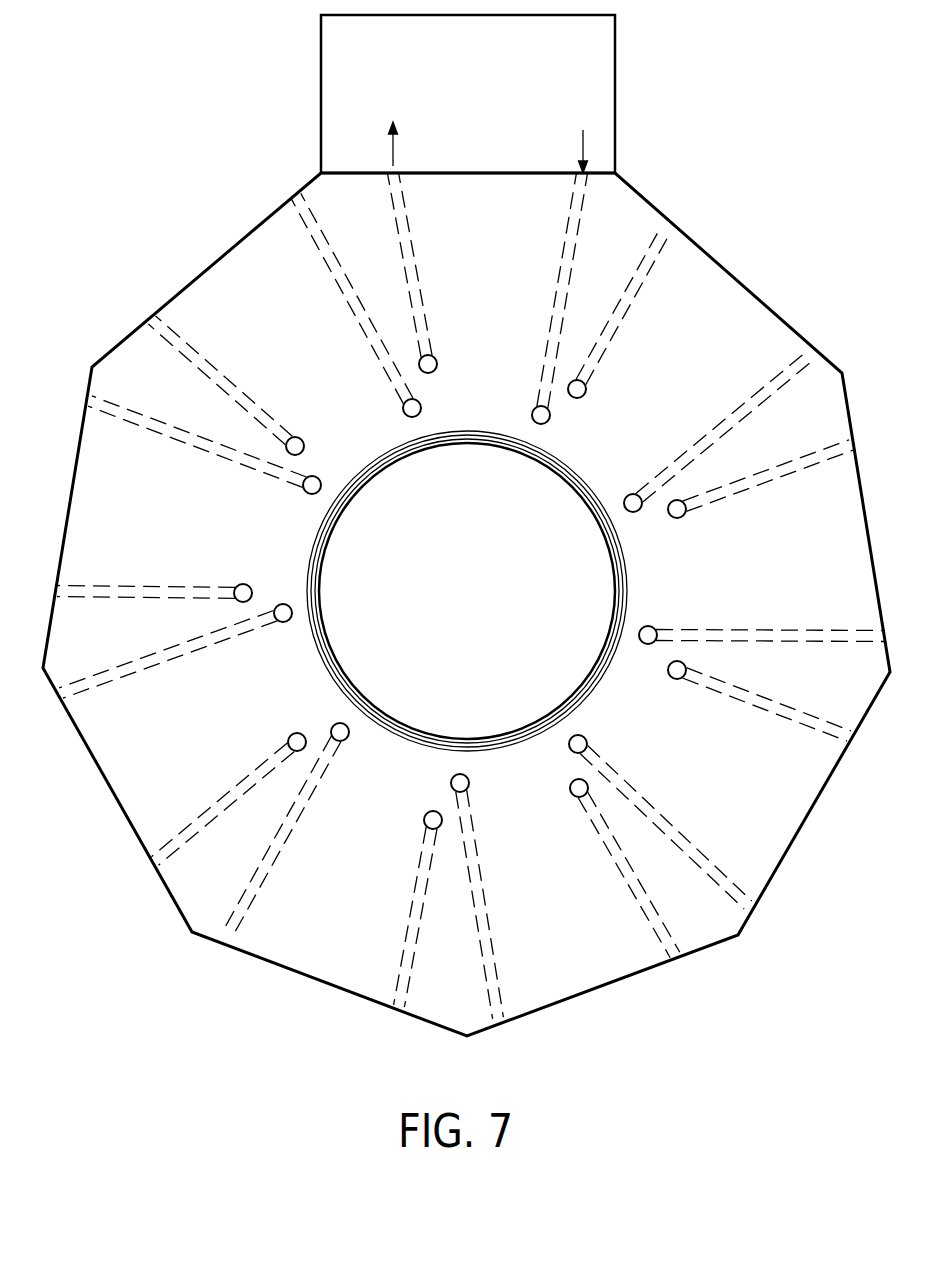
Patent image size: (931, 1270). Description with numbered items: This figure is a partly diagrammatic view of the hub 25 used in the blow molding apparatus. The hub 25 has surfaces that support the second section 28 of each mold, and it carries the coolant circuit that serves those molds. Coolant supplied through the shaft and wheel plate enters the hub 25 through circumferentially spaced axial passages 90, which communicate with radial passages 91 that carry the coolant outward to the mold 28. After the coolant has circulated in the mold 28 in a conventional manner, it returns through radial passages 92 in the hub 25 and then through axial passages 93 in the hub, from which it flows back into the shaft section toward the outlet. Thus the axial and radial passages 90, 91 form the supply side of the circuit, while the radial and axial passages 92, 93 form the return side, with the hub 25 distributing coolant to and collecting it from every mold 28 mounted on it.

The hub 25 is at (733, 298).
The second mold section 28 is at (604, 118).
The axial passages 90 is at (578, 397).
The radial passages 91 is at (632, 300).
The radial passages 92 is at (562, 238).
The axial passages 93 is at (536, 412).